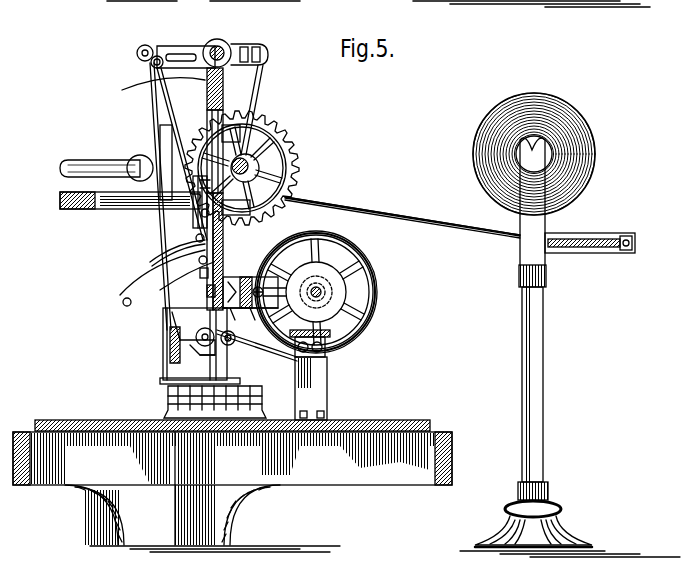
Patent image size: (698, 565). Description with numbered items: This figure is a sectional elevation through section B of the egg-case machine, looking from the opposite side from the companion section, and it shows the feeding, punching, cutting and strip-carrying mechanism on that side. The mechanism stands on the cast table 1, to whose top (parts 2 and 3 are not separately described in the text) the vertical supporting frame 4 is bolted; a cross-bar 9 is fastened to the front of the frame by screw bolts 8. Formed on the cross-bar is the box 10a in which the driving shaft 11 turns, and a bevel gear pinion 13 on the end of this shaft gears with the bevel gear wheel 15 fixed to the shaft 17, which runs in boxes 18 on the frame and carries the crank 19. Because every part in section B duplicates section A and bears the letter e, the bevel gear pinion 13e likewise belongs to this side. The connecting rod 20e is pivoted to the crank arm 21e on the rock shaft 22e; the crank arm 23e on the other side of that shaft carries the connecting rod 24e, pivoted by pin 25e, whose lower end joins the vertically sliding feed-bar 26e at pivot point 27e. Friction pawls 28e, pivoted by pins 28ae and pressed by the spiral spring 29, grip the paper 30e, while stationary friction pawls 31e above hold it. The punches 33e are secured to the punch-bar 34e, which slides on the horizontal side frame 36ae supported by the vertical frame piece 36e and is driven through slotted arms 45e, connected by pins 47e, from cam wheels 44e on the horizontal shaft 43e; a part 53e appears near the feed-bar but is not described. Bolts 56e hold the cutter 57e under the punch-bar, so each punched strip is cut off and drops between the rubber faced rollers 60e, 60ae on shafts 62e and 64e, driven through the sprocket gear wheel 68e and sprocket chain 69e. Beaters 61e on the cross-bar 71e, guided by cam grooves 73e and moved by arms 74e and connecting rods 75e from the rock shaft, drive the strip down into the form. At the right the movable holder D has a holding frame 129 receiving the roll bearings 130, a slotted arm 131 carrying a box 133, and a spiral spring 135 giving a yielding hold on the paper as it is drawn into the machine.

The table 1 is at (330, 478).
The table leg 2 is at (68, 478).
The table top plate 3 is at (360, 421).
The supporting frame 4 is at (156, 89).
The screw bolts 8 is at (197, 185).
The cross-bar 9 is at (120, 210).
The box 10a is at (138, 156).
The driving shaft 11 is at (96, 162).
The bevel gear pinion 13 is at (165, 162).
The bevel gear pinion 13e is at (296, 205).
The bevel gear wheel 15 is at (281, 130).
The shaft 17 is at (211, 186).
The boxes 18 is at (224, 151).
The crank 19 is at (262, 160).
The connecting rod 20e is at (262, 97).
The crank arm 21e is at (248, 56).
The rock shaft 22e is at (220, 45).
The crank arm 23e is at (186, 50).
The connecting rod 24e is at (172, 116).
The pin 25e is at (157, 56).
The feed-bar 26e is at (224, 246).
The pivot point 27e is at (200, 247).
The friction pawls 28e is at (203, 278).
The pins 28ae is at (173, 278).
The spiral spring 29 is at (152, 279).
The paper 30e is at (603, 212).
The friction pawls 31e is at (236, 207).
The punches 33e is at (262, 383).
The punch-bar 34e is at (257, 317).
The vertical frame piece 36e is at (312, 392).
The horizontal side frame 36ae is at (322, 233).
The horizontal shaft 43e is at (320, 288).
The cam wheel 44e is at (340, 250).
The slotted arm 45e is at (400, 262).
The pin 47e is at (256, 283).
The block 53e is at (207, 292).
The bolts 56e is at (270, 358).
The cutter 57e is at (176, 345).
The rubber faced roller 60e is at (228, 338).
The rubber faced roller 60ae is at (172, 392).
The beater 61e is at (215, 355).
The shaft 62e is at (222, 370).
The short shaft 64e is at (170, 341).
The sprocket gear wheel 68e is at (375, 305).
The sprocket chain 69e is at (335, 345).
The cross-bar 71e is at (176, 338).
The cam grooves 73e is at (212, 275).
The arm 74e is at (137, 53).
The connecting rod 75e is at (152, 90).
The movable holder D is at (518, 93).
The holding frame 129 is at (524, 246).
The roll bearings 130 is at (542, 140).
The slotted arm 131 is at (575, 255).
The box 133 is at (634, 244).
The spiral spring 135 is at (607, 250).